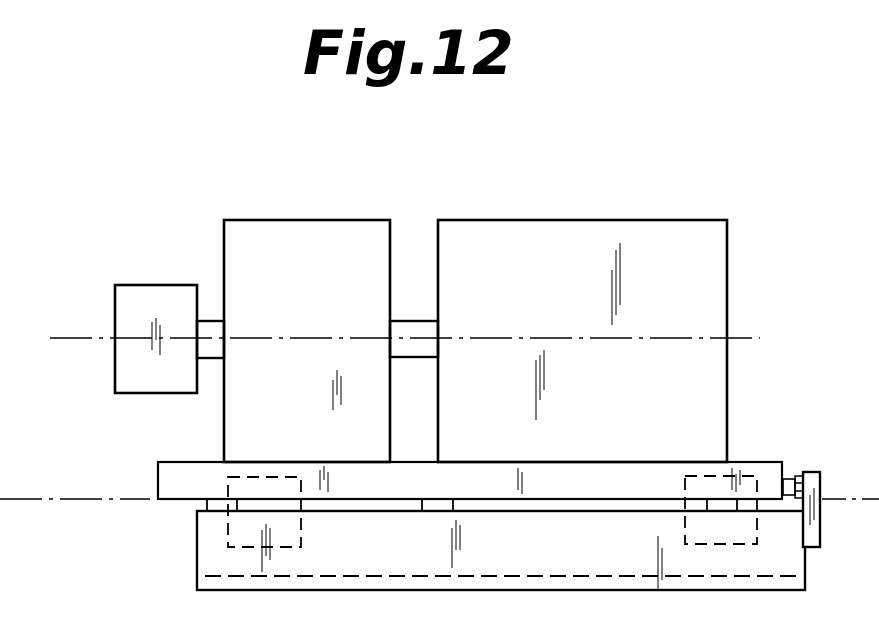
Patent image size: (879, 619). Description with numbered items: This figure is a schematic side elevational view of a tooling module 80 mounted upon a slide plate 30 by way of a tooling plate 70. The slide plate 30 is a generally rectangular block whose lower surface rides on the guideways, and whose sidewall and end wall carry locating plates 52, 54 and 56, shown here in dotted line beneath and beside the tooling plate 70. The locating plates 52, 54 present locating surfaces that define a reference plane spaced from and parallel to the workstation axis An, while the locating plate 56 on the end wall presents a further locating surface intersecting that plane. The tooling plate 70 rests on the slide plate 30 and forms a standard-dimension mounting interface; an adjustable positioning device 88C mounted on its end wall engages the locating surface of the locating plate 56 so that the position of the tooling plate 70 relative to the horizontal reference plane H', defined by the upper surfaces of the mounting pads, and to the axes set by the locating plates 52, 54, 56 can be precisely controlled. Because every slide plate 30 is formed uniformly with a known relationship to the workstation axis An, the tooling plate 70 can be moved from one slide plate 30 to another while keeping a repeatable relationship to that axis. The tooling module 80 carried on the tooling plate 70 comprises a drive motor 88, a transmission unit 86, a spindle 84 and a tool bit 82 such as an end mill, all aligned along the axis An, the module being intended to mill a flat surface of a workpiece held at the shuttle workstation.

The tooling module 80 is at (713, 185).
The tool bit 82 is at (146, 282).
The spindle 84 is at (210, 360).
The transmission unit 86 is at (312, 220).
The drive motor 88 is at (613, 220).
The adjustable positioning device 88C is at (790, 470).
The tooling plate 70 is at (157, 479).
The slide plate 30 is at (196, 558).
The locating plate 54 is at (301, 538).
The locating plate 52 is at (685, 521).
The locating plate 56 is at (822, 490).
The workstation axis An is at (742, 336).
The reference plane H' is at (439, 517).